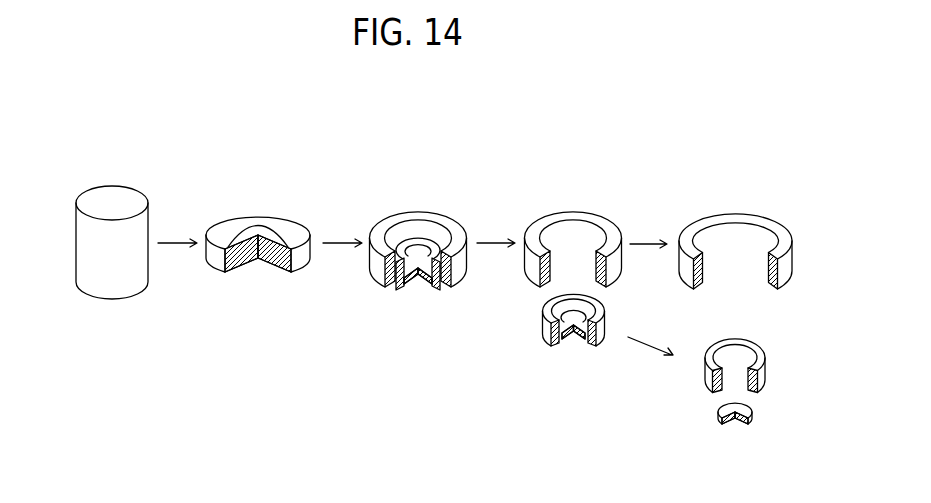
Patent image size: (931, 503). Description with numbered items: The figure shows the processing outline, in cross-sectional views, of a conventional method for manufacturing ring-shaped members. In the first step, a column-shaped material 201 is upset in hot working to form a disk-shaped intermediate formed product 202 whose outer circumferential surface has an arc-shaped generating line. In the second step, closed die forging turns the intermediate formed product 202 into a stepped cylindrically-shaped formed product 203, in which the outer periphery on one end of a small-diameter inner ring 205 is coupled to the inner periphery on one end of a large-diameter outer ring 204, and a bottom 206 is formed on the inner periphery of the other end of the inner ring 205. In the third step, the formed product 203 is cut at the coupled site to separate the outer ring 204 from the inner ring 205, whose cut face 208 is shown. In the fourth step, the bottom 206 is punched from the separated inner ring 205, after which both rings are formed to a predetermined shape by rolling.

The column-shaped material 201 is at (96, 172).
The intermediate formed product 202 is at (232, 215).
The formed product 203 is at (396, 210).
The outer ring 204 is at (541, 216).
The inner ring 205 is at (403, 293).
The bottom 206 is at (417, 282).
The cut face of outer ring 208 is at (704, 281).